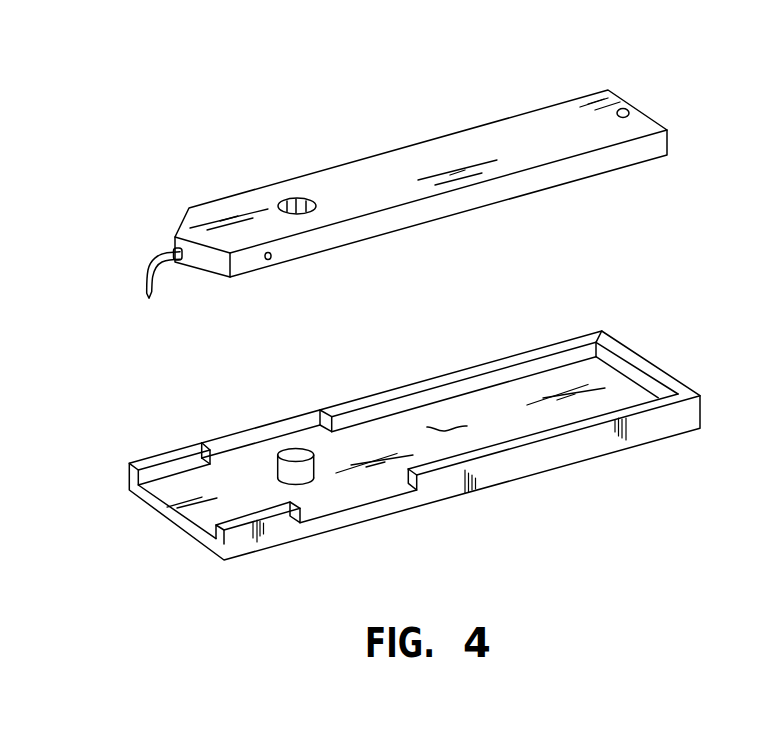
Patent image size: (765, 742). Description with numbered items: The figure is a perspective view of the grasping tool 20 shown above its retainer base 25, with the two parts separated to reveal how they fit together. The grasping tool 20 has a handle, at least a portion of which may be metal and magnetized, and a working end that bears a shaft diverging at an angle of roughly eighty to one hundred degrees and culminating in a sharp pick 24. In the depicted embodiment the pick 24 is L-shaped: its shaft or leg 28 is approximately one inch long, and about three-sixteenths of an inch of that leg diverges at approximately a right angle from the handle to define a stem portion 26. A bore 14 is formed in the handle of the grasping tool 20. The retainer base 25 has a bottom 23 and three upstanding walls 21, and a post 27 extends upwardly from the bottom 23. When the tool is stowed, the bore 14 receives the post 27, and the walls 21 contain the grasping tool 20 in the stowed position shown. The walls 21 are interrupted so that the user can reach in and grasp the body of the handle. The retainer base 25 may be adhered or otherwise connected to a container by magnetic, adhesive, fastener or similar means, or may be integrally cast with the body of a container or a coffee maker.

The grasping tool 20 is at (421, 139).
The bore 14 is at (303, 200).
The pick 24 is at (125, 271).
The leg 28 is at (139, 280).
The stem portion 26 is at (167, 262).
The upstanding walls 21 is at (247, 517).
The bottom 23 is at (447, 426).
The post 27 is at (296, 449).
The retainer base 25 is at (381, 421).